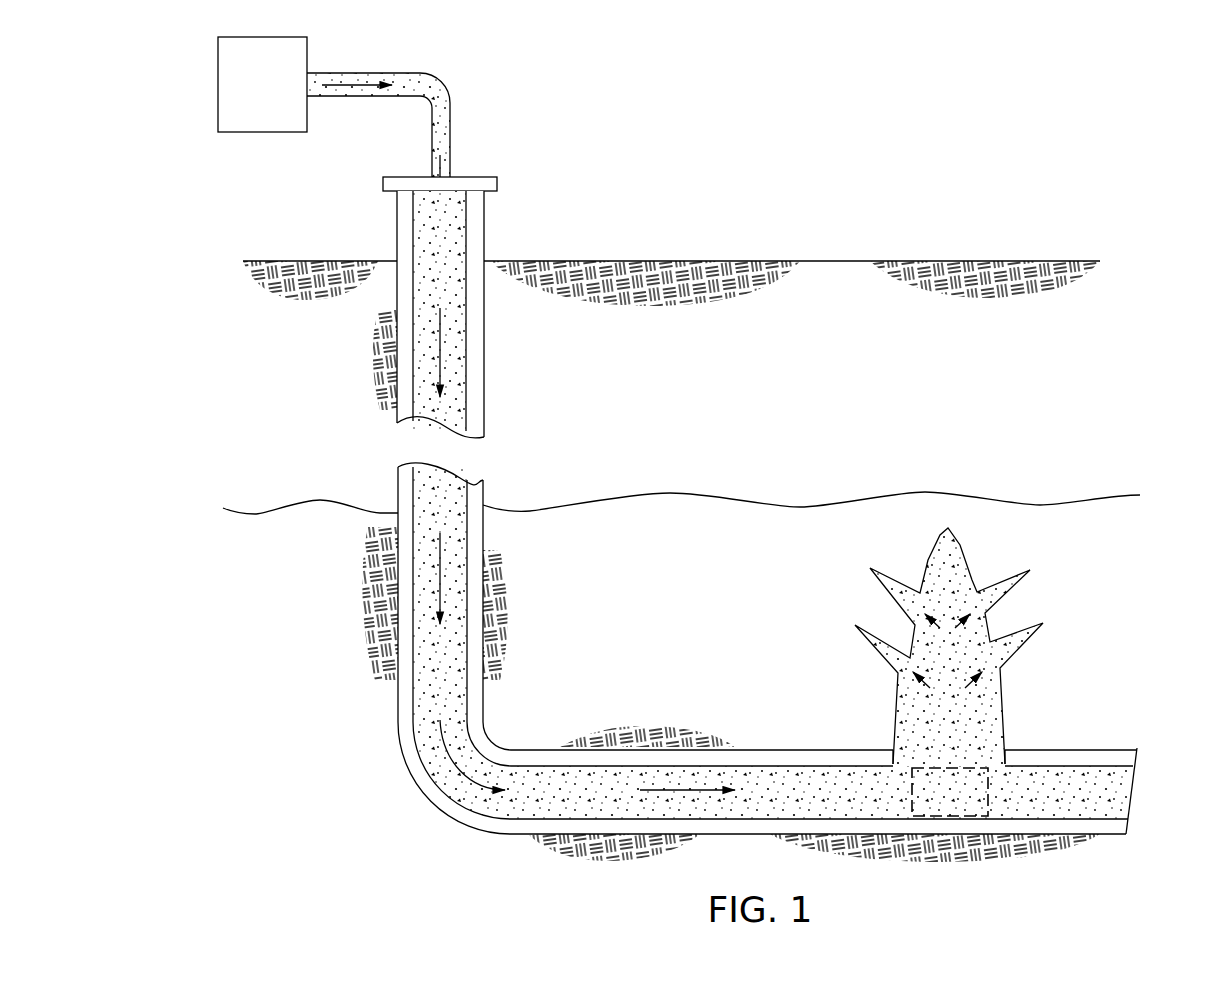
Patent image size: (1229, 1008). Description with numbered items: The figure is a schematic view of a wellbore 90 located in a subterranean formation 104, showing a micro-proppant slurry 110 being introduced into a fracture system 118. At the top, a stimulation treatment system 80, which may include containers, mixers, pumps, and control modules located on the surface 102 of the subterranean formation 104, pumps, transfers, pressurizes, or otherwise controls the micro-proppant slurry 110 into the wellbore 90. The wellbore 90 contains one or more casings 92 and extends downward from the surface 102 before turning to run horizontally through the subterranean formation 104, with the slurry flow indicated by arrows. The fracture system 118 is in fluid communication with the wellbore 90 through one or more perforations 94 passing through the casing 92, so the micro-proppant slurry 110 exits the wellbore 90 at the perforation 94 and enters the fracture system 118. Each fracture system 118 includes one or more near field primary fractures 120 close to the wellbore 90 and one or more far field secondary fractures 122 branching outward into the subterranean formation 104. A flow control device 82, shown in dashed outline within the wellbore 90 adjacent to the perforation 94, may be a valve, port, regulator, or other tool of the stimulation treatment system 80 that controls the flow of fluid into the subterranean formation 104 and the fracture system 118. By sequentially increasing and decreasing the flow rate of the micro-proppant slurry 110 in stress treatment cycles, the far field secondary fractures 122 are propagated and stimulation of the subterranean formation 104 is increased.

The stimulation treatment system 80 is at (249, 98).
The flow control device 82 is at (975, 817).
The wellbore 90 is at (458, 336).
The casing 92 is at (792, 512).
The perforation 94 is at (884, 754).
The surface 102 is at (753, 260).
The subterranean formation 104 is at (681, 615).
The micro-proppant slurry 110 is at (358, 72).
The fracture system 118 is at (978, 642).
The near field primary fracture 120 is at (990, 711).
The far field secondary fracture 122 is at (1022, 638).